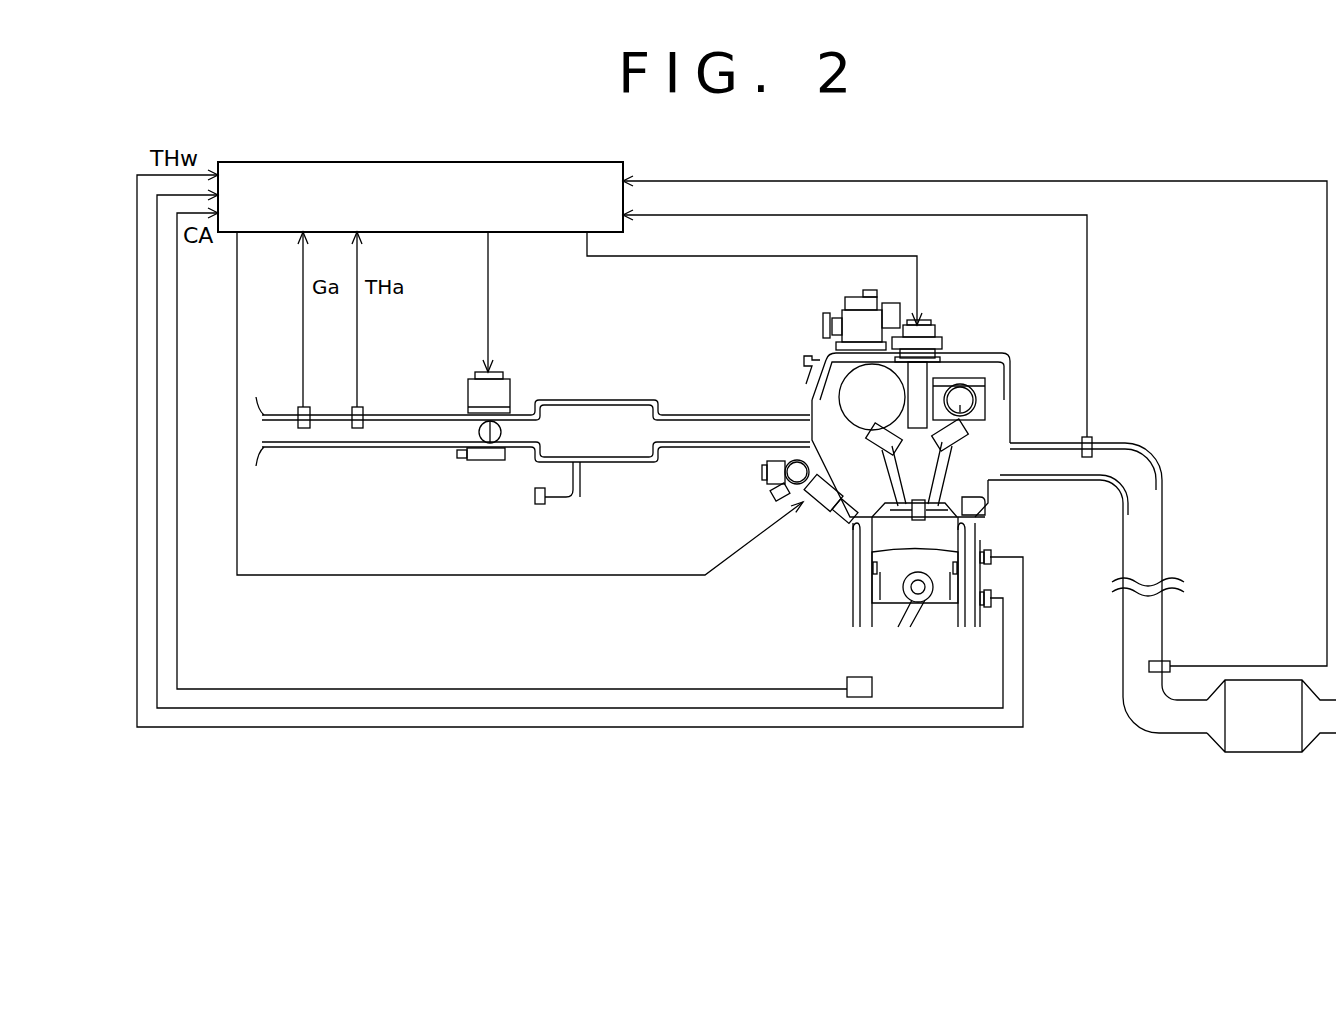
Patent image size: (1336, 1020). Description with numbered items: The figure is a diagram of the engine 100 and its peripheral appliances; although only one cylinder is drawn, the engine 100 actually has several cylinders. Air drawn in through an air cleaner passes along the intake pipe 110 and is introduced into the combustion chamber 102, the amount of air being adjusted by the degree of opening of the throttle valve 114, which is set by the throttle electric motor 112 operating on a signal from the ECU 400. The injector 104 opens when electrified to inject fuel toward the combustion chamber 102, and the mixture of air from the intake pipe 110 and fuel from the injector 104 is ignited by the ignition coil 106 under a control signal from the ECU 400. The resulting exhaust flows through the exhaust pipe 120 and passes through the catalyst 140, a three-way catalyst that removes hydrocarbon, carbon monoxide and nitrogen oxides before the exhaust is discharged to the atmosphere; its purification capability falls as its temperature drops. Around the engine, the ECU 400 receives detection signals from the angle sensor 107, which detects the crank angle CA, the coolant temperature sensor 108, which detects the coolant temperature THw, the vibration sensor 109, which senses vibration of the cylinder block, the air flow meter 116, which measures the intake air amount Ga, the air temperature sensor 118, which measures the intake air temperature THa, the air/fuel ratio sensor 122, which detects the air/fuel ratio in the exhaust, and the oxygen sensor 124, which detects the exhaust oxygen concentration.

The ECU 400 is at (418, 162).
The engine 100 is at (790, 582).
The combustion chamber 102 is at (940, 533).
The injector 104 is at (840, 507).
The ignition coil 106 is at (921, 326).
The angle sensor 107 is at (850, 675).
The coolant temperature sensor 108 is at (994, 557).
The vibration sensor 109 is at (993, 598).
The intake pipe 110 is at (628, 463).
The throttle electric motor 112 is at (512, 385).
The throttle valve 114 is at (480, 437).
The air flow meter 116 is at (300, 403).
The air temperature sensor 118 is at (358, 403).
The exhaust pipe 120 is at (1130, 446).
The air/fuel ratio sensor 122 is at (1084, 437).
The oxygen sensor 124 is at (1167, 661).
The catalyst 140 is at (1262, 752).